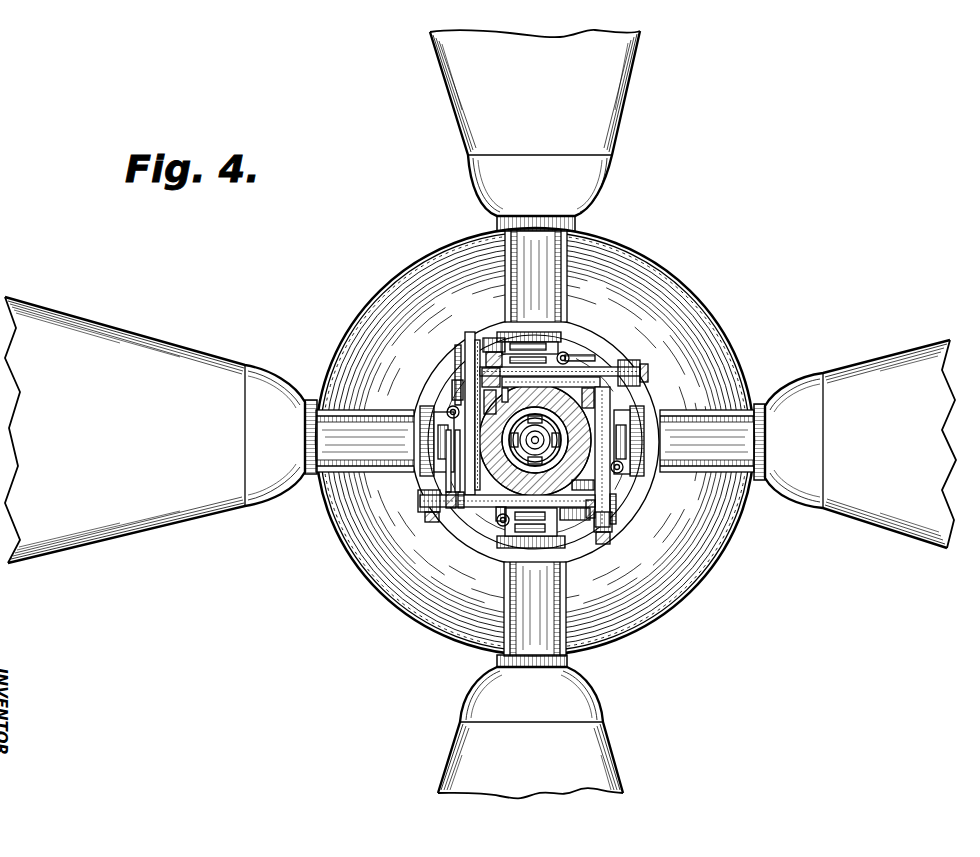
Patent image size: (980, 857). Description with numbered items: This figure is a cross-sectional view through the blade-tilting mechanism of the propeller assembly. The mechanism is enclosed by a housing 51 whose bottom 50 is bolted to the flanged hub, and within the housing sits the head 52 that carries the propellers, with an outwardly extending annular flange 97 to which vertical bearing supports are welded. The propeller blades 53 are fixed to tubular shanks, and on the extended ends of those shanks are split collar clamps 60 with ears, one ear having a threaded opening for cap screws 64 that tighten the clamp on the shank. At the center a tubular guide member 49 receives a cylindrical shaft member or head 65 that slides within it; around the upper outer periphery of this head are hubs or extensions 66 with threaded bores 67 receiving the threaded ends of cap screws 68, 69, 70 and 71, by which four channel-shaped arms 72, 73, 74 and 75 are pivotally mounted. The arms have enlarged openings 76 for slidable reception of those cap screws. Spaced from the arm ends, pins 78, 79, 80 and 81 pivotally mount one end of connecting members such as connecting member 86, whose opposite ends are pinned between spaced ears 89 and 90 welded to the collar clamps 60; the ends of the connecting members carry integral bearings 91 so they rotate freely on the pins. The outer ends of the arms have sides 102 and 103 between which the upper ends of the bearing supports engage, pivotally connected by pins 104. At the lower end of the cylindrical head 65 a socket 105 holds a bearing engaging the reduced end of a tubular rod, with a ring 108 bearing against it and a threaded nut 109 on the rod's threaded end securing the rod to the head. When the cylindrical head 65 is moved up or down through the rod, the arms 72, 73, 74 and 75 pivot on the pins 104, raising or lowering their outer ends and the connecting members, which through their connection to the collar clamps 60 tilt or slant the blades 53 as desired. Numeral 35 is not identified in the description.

The flange 35 is at (384, 455).
The tubular guide member 49 is at (500, 514).
The bottom of housing 50 is at (430, 598).
The housing 51 is at (700, 588).
The head 52 is at (652, 478).
The blades 53 is at (86, 548).
The split collar clamps 60 is at (612, 430).
The cap screws 64 is at (666, 449).
The cylindrical shaft member or head 65 is at (590, 365).
The hubs or extensions 66 is at (606, 370).
The threaded bores 67 is at (612, 488).
The cap screw 68 is at (616, 402).
The cap screw 69 is at (572, 520).
The cap screw 70 is at (442, 480).
The cap screw 71 is at (497, 355).
The arm 72 is at (652, 428).
The arm 73 is at (526, 512).
The arm 74 is at (464, 396).
The arm 75 is at (578, 356).
The enlarged openings 76 is at (620, 502).
The pin 78 is at (618, 378).
The pin 79 is at (622, 512).
The pin 80 is at (452, 510).
The pin 81 is at (474, 388).
The connecting member 86 is at (490, 345).
The ear 89 is at (564, 542).
The ear 90 is at (446, 486).
The integral bearing 91 is at (462, 510).
The annular flange 97 is at (584, 330).
The side of arm 102 is at (596, 540).
The side of arm 103 is at (606, 522).
The pins 104 is at (432, 512).
The socket 105 is at (468, 378).
The ring 108 is at (534, 408).
The threaded nut 109 is at (566, 318).